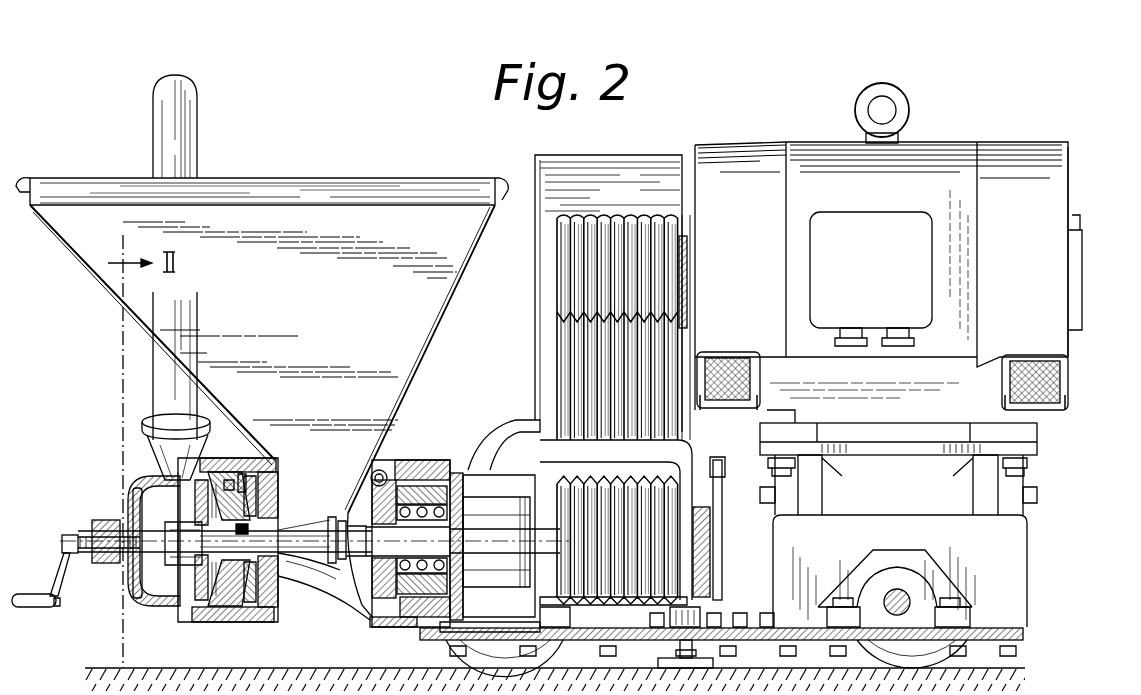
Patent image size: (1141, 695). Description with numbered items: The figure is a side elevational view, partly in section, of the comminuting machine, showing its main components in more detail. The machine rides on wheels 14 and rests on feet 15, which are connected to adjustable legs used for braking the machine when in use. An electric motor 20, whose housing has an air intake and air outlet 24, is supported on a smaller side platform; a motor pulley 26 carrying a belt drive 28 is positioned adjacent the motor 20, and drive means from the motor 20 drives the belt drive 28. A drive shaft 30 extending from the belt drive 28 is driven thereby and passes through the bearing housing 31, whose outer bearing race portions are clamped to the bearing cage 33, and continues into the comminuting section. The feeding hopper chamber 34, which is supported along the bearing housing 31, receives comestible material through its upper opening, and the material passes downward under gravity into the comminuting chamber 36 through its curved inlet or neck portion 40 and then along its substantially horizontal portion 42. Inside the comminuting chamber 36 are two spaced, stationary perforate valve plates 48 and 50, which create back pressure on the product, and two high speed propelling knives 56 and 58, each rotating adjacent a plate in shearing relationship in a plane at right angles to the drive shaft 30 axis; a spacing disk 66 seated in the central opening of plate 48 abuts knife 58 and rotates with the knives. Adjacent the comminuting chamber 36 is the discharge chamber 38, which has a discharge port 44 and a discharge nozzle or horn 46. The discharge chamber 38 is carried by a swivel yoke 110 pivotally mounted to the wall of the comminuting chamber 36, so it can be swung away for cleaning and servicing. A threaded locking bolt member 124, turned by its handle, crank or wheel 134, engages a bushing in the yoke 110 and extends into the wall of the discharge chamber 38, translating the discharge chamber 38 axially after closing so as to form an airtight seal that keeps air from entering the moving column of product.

The wheels 14 is at (540, 662).
The feet 15 is at (713, 663).
The electric motor 20 is at (1072, 168).
The air intake and air outlet 24 is at (734, 406).
The motor pulley 26 is at (556, 320).
The belt drive 28 is at (600, 216).
The drive shaft 30 is at (486, 543).
The bearing housing 31 is at (437, 460).
The bearing cage 33 is at (1032, 448).
The feeding hopper chamber 34 is at (300, 325).
The comminuting chamber 36 is at (236, 616).
The discharge chamber 38 is at (160, 606).
The curved inlet or neck portion 40 is at (266, 552).
The substantially horizontal portion 42 is at (272, 574).
The outlet means or discharge port 44 is at (148, 465).
The discharge nozzle or horn 46 is at (152, 383).
The perforate valve plate 48 is at (256, 484).
The perforate valve plate 50 is at (228, 480).
The high speed propelling knife 56 is at (266, 510).
The high speed propelling knife 58 is at (242, 482).
The spacing disk 66 is at (250, 528).
The swivel yoke 110 is at (106, 520).
The threaded locking bolt member 124 is at (84, 552).
The handle, crank or wheel 134 is at (34, 602).